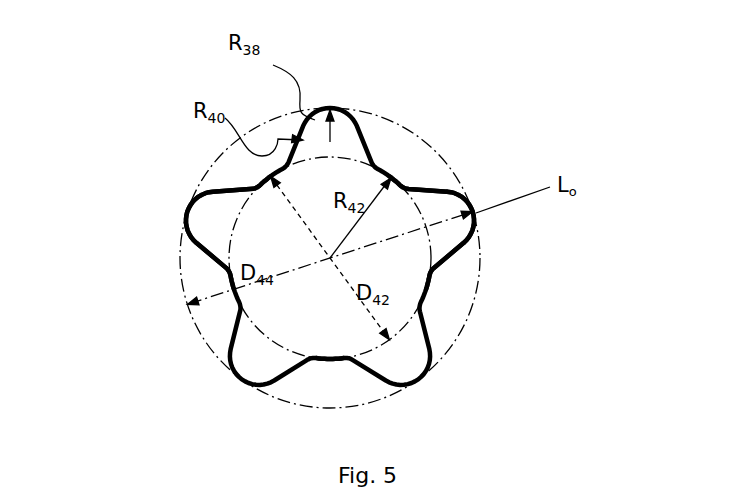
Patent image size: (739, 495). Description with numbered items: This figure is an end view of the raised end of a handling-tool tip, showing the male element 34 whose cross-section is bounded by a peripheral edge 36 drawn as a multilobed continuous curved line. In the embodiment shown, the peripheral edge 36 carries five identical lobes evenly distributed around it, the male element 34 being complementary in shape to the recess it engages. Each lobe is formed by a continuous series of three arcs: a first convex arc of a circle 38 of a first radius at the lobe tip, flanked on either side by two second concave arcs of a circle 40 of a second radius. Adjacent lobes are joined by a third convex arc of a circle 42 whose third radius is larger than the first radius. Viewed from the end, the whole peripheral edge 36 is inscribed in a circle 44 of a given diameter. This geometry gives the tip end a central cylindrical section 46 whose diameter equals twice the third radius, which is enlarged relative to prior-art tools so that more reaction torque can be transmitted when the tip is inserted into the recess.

The male element 34 is at (158, 168).
The peripheral edge 36 is at (215, 253).
The first convex arc of a circle 38 is at (475, 230).
The second concave arc of a circle 40 is at (433, 190).
The third convex arc of a circle 42 is at (433, 282).
The circle 44 is at (377, 115).
The central cylindrical section 46 is at (285, 348).